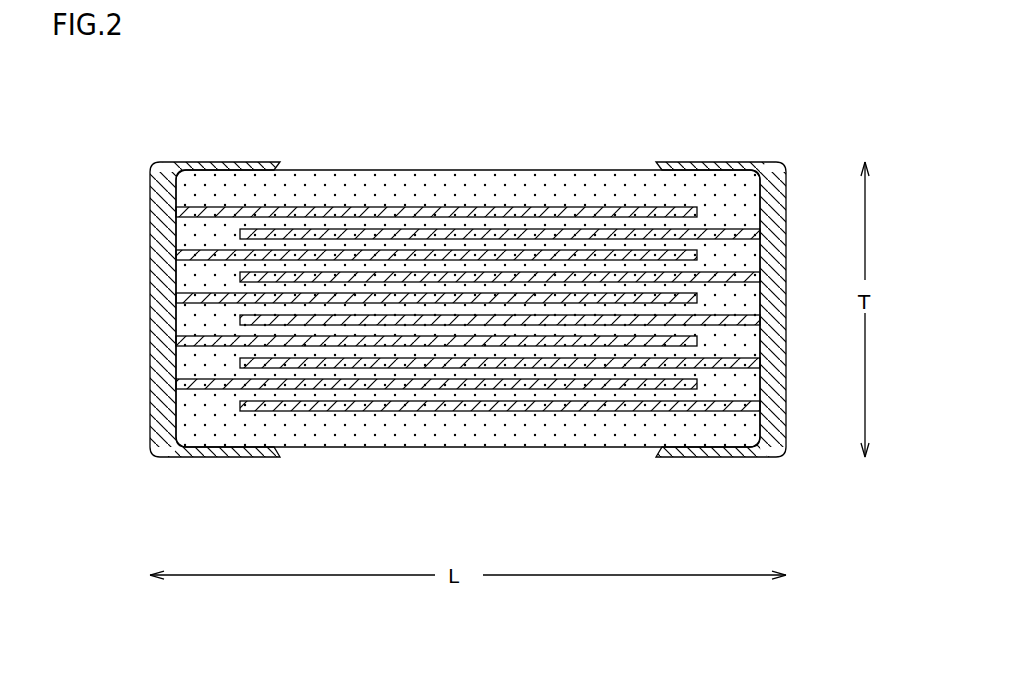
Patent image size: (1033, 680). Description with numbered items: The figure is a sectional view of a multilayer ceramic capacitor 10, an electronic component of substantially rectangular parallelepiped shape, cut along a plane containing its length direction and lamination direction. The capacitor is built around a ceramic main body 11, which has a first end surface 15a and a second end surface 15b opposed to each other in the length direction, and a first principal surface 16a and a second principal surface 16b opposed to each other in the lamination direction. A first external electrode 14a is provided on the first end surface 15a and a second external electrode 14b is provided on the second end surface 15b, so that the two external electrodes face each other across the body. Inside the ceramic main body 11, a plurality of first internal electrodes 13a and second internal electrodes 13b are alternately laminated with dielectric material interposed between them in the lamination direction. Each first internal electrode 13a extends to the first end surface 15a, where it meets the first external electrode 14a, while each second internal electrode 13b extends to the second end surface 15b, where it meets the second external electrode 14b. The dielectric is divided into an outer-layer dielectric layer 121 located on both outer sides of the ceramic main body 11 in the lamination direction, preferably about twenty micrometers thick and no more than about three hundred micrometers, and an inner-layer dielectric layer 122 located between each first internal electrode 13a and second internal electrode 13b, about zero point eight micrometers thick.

The multilayer ceramic capacitor 10 is at (680, 125).
The ceramic main body 11 is at (625, 170).
The outer-layer dielectric layer 121 is at (382, 175).
The inner-layer dielectric layer 122 is at (512, 250).
The first internal electrode 13a is at (580, 250).
The second internal electrode 13b is at (547, 357).
The first external electrode 14a is at (194, 249).
The second external electrode 14b is at (592, 332).
The first end surface 15a is at (172, 232).
The second end surface 15b is at (765, 213).
The first principal surface 16a is at (319, 170).
The second principal surface 16b is at (345, 447).